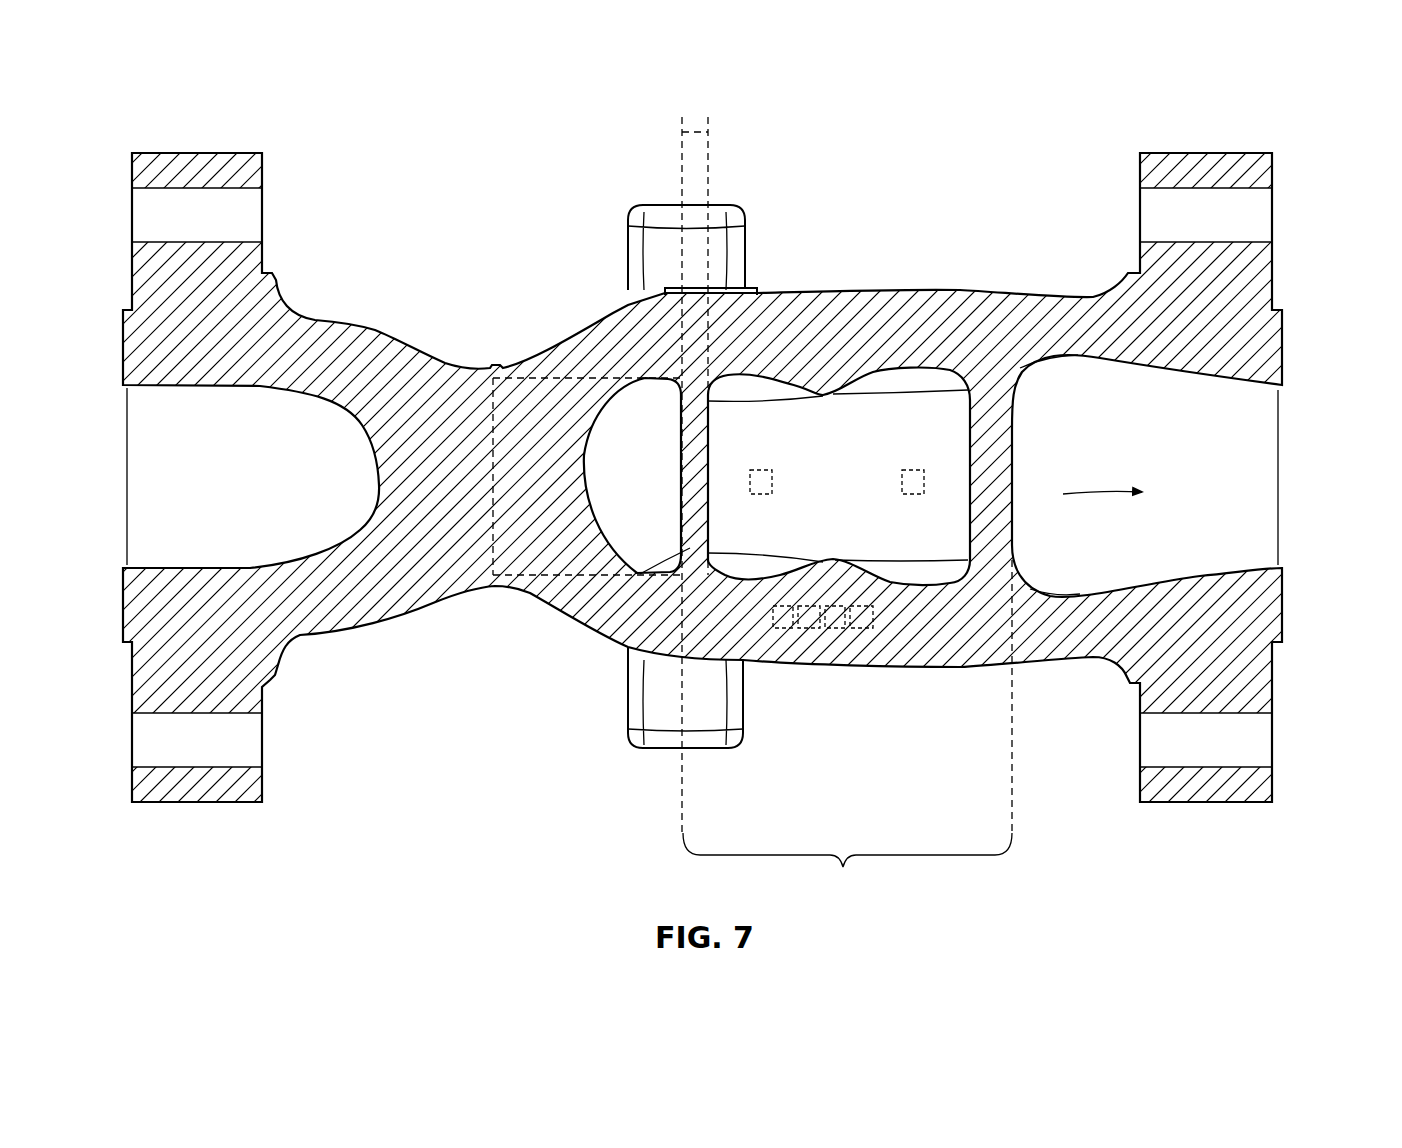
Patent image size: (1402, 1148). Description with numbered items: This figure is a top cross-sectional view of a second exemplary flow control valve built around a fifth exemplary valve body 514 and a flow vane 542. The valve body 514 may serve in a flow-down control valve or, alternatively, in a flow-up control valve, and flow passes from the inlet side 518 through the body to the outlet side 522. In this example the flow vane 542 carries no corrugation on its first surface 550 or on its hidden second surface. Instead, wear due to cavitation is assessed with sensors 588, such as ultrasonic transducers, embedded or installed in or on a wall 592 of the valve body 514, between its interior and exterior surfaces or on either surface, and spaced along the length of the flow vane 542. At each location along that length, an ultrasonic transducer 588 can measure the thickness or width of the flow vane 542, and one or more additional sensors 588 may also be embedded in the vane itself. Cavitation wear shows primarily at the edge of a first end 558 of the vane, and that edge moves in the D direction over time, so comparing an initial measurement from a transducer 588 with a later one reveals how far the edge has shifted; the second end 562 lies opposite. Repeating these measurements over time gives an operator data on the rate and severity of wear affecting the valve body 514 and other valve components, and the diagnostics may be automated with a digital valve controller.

The valve body 514 is at (1006, 116).
The inlet 518 is at (114, 510).
The outlet 522 is at (1296, 459).
The flow vane 542 is at (838, 424).
The first surface 550 is at (865, 497).
The first end 558 is at (643, 577).
The wall 562 is at (997, 547).
The sensor 588 is at (896, 752).
The wall 592 is at (888, 635).